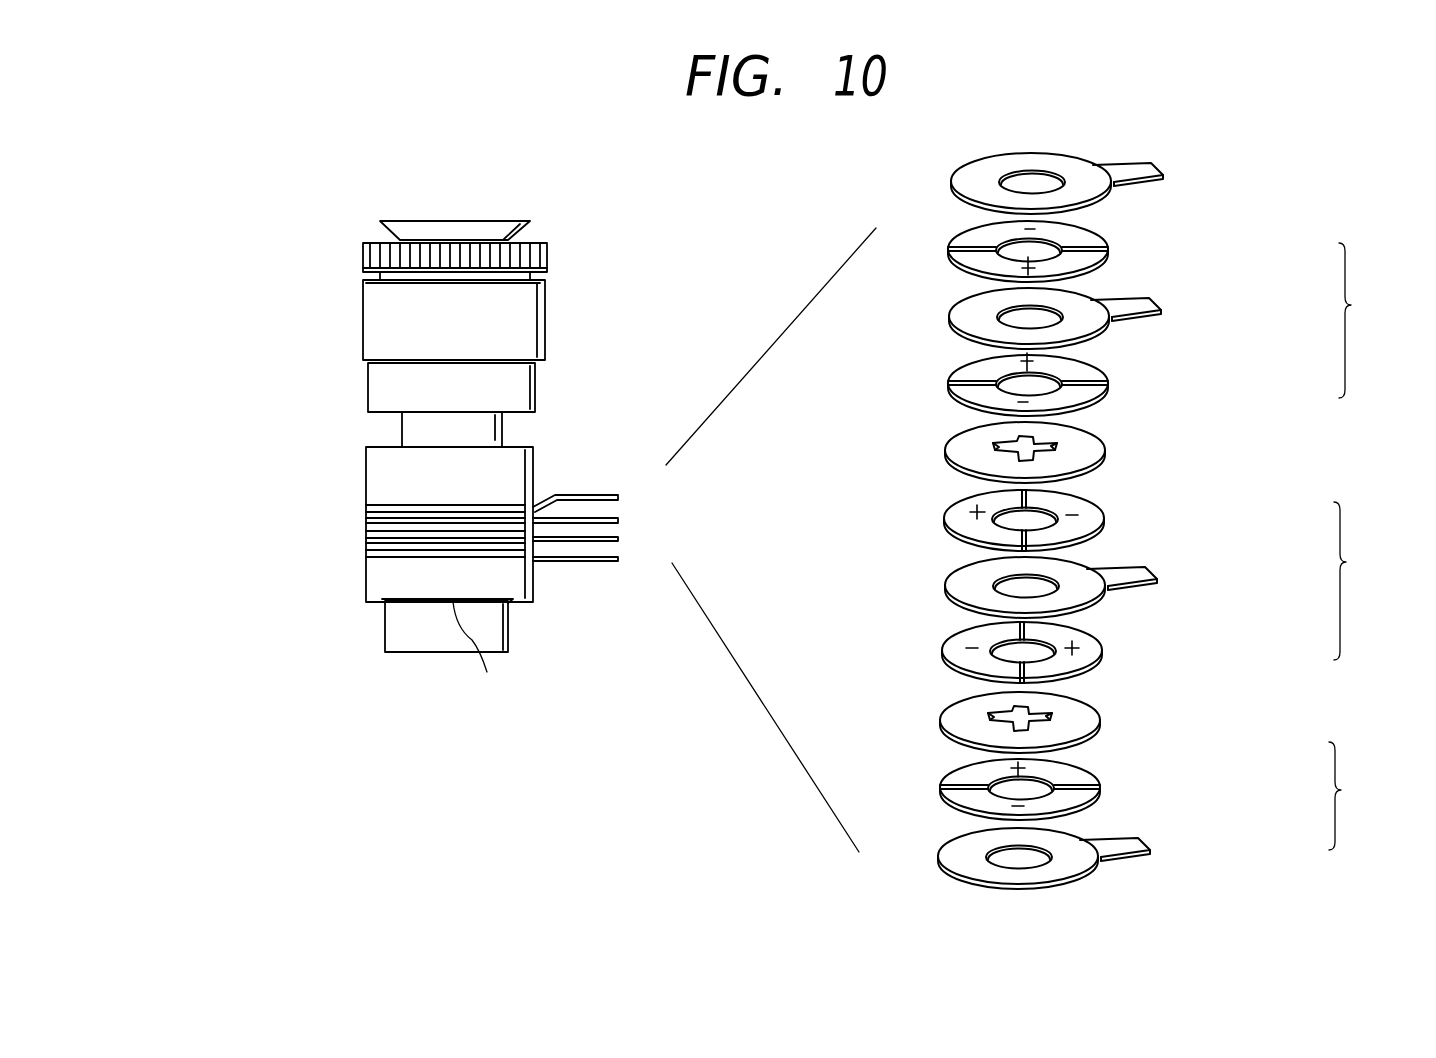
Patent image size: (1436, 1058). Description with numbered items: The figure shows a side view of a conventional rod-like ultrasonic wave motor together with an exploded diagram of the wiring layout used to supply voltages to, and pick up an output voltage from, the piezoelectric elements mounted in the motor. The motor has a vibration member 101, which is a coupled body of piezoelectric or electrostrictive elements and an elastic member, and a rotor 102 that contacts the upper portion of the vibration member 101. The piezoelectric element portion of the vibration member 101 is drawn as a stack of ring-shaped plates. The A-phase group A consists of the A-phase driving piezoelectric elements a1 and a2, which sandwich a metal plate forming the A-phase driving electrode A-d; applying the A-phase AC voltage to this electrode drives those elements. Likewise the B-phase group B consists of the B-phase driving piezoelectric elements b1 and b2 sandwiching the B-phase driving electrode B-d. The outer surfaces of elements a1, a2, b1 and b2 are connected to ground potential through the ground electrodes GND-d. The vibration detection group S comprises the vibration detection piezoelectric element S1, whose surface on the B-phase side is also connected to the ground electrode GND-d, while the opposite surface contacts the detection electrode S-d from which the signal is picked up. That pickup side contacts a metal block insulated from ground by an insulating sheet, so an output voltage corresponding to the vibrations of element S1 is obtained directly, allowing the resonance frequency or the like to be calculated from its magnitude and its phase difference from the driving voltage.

The vibration member 101 is at (274, 643).
The rotor 102 is at (293, 273).
The ground electrode GND-d is at (1120, 453).
The A-phase driving piezoelectric element a1 is at (1006, 251).
The A-phase driving electrode A-d is at (1104, 318).
The A-phase driving piezoelectric element a2 is at (1005, 384).
The B-phase driving piezoelectric element b1 is at (1002, 520).
The B-phase driving electrode B-d is at (1100, 587).
The B-phase driving piezoelectric element b2 is at (1001, 652).
The vibration detection piezoelectric element S1 is at (996, 789).
The vibration detection electrode S-d is at (1094, 858).
The A-phase group A is at (1357, 320).
The B-phase group B is at (1354, 581).
The vibration detection signal group S is at (1349, 796).